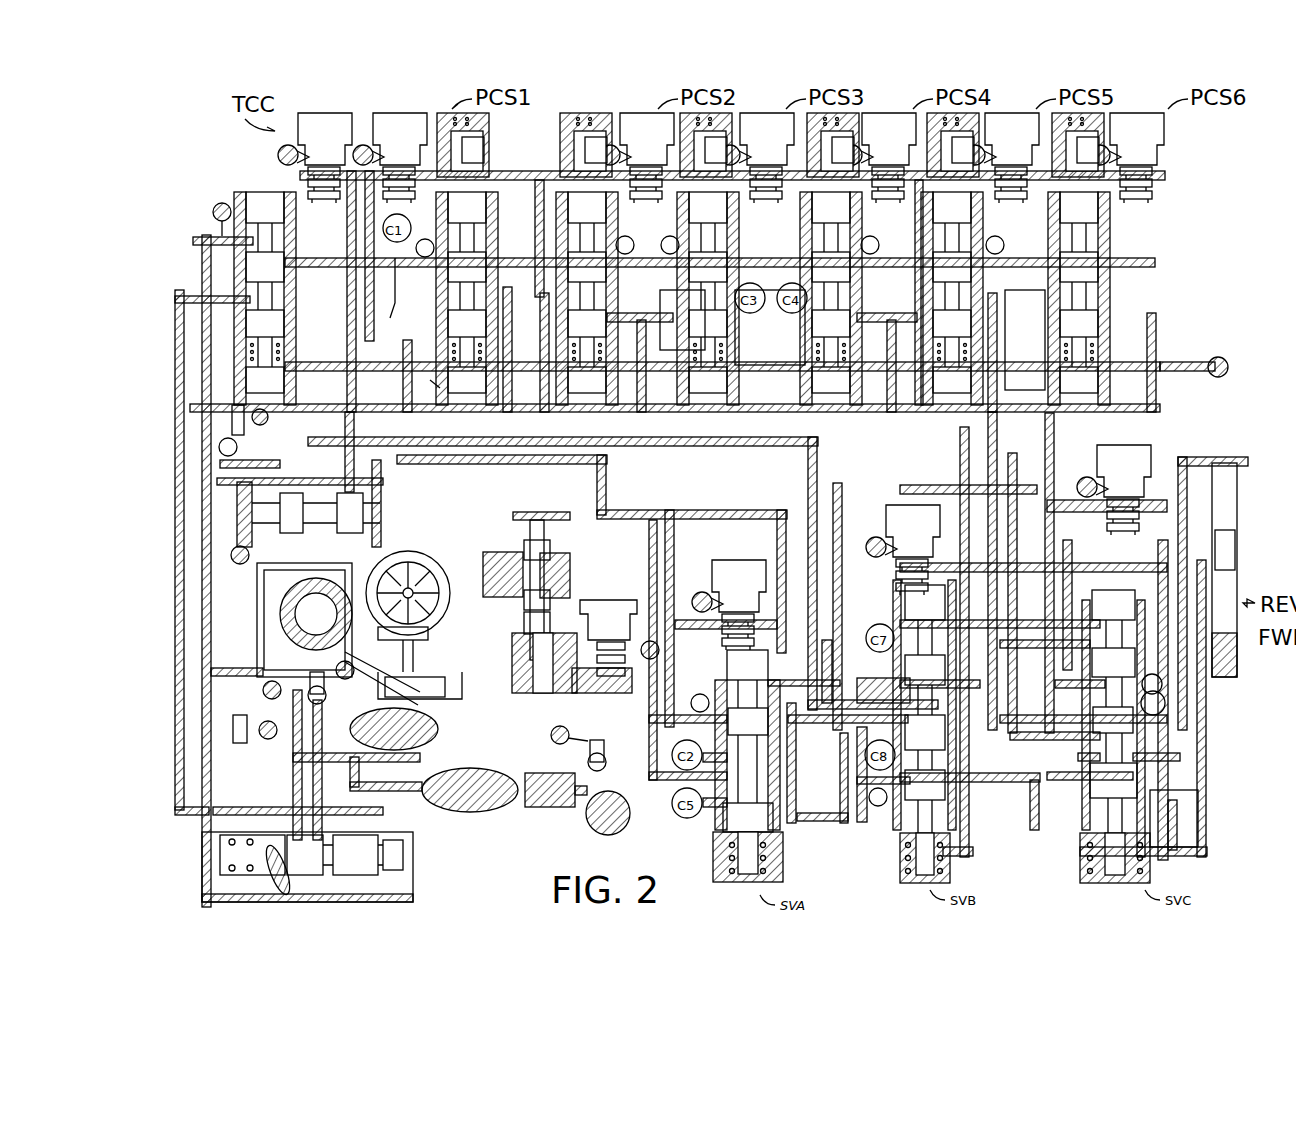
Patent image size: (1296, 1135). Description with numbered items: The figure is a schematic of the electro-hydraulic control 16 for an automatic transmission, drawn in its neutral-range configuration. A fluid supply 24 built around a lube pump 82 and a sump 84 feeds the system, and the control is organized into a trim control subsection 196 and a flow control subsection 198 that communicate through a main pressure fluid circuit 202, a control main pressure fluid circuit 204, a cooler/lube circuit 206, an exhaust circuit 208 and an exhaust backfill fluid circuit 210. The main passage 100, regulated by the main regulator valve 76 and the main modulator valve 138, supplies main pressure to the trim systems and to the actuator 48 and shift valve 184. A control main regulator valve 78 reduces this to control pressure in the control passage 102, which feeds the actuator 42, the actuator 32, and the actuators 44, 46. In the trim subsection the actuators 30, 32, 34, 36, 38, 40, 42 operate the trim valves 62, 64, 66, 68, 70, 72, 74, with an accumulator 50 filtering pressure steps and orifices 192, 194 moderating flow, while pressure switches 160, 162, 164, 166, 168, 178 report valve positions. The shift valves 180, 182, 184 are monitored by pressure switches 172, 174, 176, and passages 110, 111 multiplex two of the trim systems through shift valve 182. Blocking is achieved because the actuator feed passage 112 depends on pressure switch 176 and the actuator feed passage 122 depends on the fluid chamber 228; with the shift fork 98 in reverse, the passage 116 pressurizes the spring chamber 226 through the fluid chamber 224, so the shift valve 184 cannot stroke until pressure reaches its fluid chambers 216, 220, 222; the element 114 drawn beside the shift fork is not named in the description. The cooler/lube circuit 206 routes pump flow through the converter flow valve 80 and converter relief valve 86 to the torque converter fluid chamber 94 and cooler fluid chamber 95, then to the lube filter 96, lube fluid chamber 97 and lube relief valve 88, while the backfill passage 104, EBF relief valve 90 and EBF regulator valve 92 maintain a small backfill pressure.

The electro-hydraulic control 16 is at (1230, 140).
The fluid supply 24 is at (470, 685).
The electro-hydraulic actuator 30 is at (392, 113).
The electro-hydraulic actuator 32 is at (635, 113).
The electro-hydraulic actuator 34 is at (768, 113).
The electro-hydraulic actuator 36 is at (888, 113).
The electro-hydraulic actuator 38 is at (1013, 113).
The electro-hydraulic actuator 40 is at (1140, 113).
The electro-hydraulic actuator 42 is at (330, 100).
The electro-hydraulic actuator 44 is at (705, 565).
The electro-hydraulic actuator 46 is at (886, 537).
The electro-hydraulic actuator 48 is at (1102, 446).
The accumulator 50 is at (485, 134).
The trim valve 62 is at (500, 185).
The trim valve 64 is at (560, 140).
The trim valve 66 is at (745, 207).
The trim valve 68 is at (815, 180).
The trim valve 70 is at (935, 180).
The trim valve 72 is at (1128, 210).
The trim valve 74 is at (247, 175).
The main regulator valve 76 is at (585, 553).
The control main regulator valve 78 is at (290, 542).
The converter flow valve 80 is at (440, 867).
The lube pump 82 is at (265, 595).
The sump 84 is at (447, 673).
The converter relief valve 86 is at (335, 695).
The lube relief valve 88 is at (630, 765).
The EBF relief valve 90 is at (252, 440).
The EBF regulator valve 92 is at (245, 740).
The torque converter fluid chamber 94 is at (440, 735).
The cooler fluid chamber 95 is at (480, 812).
The lube filter 96 is at (548, 810).
The lube fluid chamber 97 is at (625, 830).
The shift fork 98 is at (1245, 505).
The main passage 100 is at (500, 433).
The control passage 102 is at (730, 508).
The backfill passage 104 is at (445, 487).
The fluid passage 110 is at (997, 302).
The fluid passage 111 is at (1000, 352).
The actuator feed passage 112 is at (910, 435).
The manual valve housing 114 is at (1190, 457).
The passage 116 is at (1213, 758).
The actuator feed passage 122 is at (370, 165).
The main modulator valve 138 is at (609, 600).
The pressure switch 160 is at (428, 245).
The pressure switch 162 is at (630, 237).
The pressure switch 164 is at (665, 260).
The pressure switch 166 is at (873, 237).
The pressure switch 168 is at (1000, 237).
The pressure switch 172 is at (670, 703).
The pressure switch 174 is at (885, 810).
The pressure switch 176 is at (1165, 715).
The pressure switch 178 is at (220, 205).
The shift valve 180 is at (715, 665).
The shift valve 182 is at (890, 605).
The shift valve 184 is at (1107, 530).
The orifice 192 is at (420, 388).
The orifice 194 is at (410, 290).
The trim control subsection 196 is at (1186, 276).
The flow control subsection 198 is at (1225, 834).
The main pressure fluid circuit 202 is at (505, 543).
The control main pressure fluid circuit 204 is at (340, 466).
The cooler/lube circuit 206 is at (275, 798).
The exhaust circuit 208 is at (1187, 349).
The exhaust backfill fluid circuit 210 is at (190, 818).
The fluid chamber 216 is at (1140, 595).
The fluid chamber 220 is at (1165, 688).
The fluid chamber 222 is at (1185, 770).
The fluid chamber 224 is at (1067, 818).
The spring chamber 226 is at (1080, 883).
The fluid chamber 228 is at (970, 708).